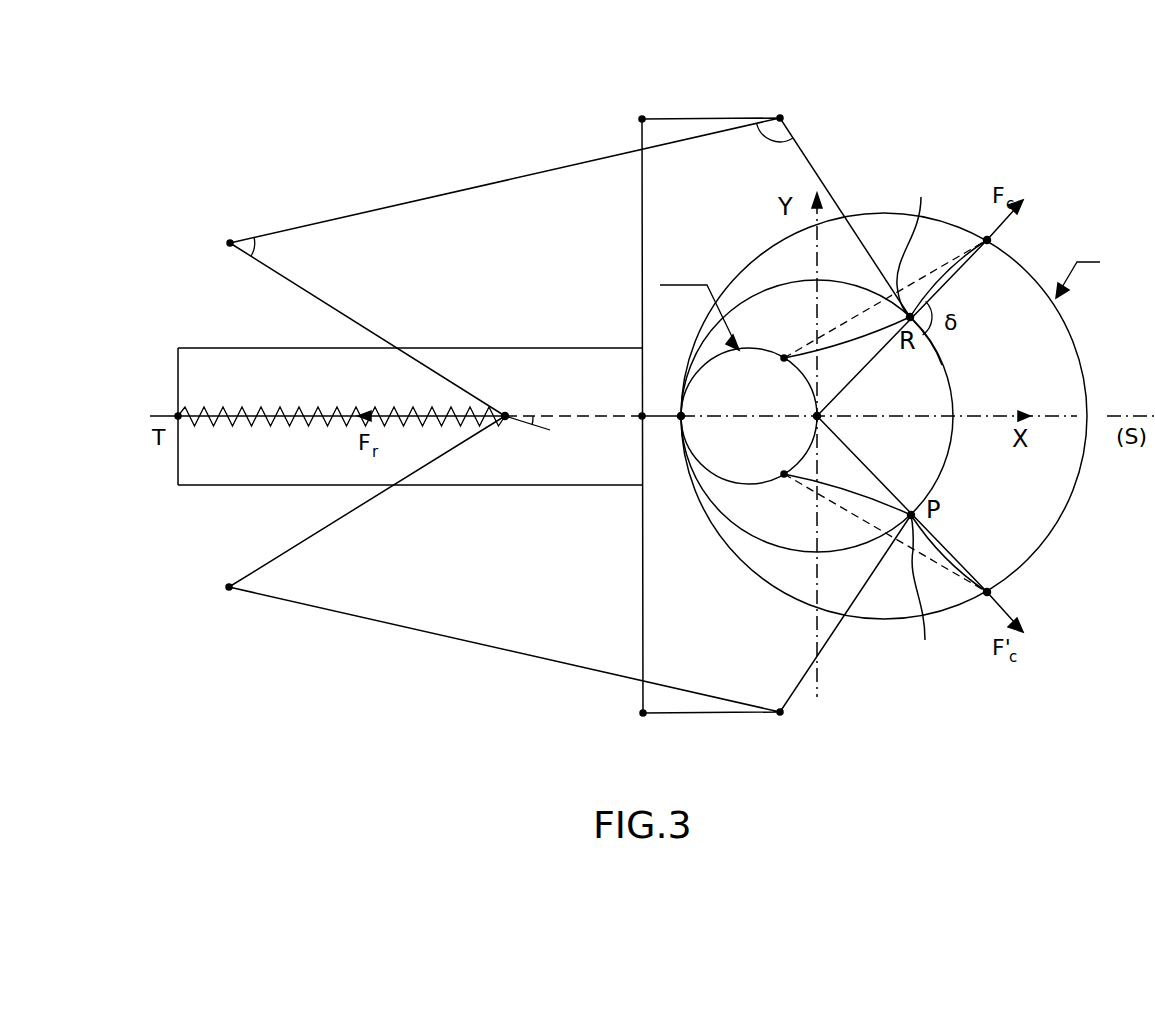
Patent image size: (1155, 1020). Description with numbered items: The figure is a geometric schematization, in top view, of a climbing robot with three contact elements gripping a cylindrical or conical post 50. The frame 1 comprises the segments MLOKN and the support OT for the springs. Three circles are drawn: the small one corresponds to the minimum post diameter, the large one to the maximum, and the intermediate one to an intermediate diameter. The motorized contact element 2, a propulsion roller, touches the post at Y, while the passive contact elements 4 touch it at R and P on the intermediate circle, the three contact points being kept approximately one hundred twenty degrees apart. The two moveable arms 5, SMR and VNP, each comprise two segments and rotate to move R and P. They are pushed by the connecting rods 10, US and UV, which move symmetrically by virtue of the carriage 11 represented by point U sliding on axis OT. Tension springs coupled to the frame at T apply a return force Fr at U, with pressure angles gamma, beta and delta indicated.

The frame 1 is at (642, 552).
The motorized contact element 2 is at (680, 418).
The passive contact element 4 is at (919, 422).
The moveable arm 5 is at (597, 160).
The control connecting rod 10 is at (373, 333).
The sliding carriage 11 is at (508, 420).
The cylindrical or conical post 50 is at (948, 458).